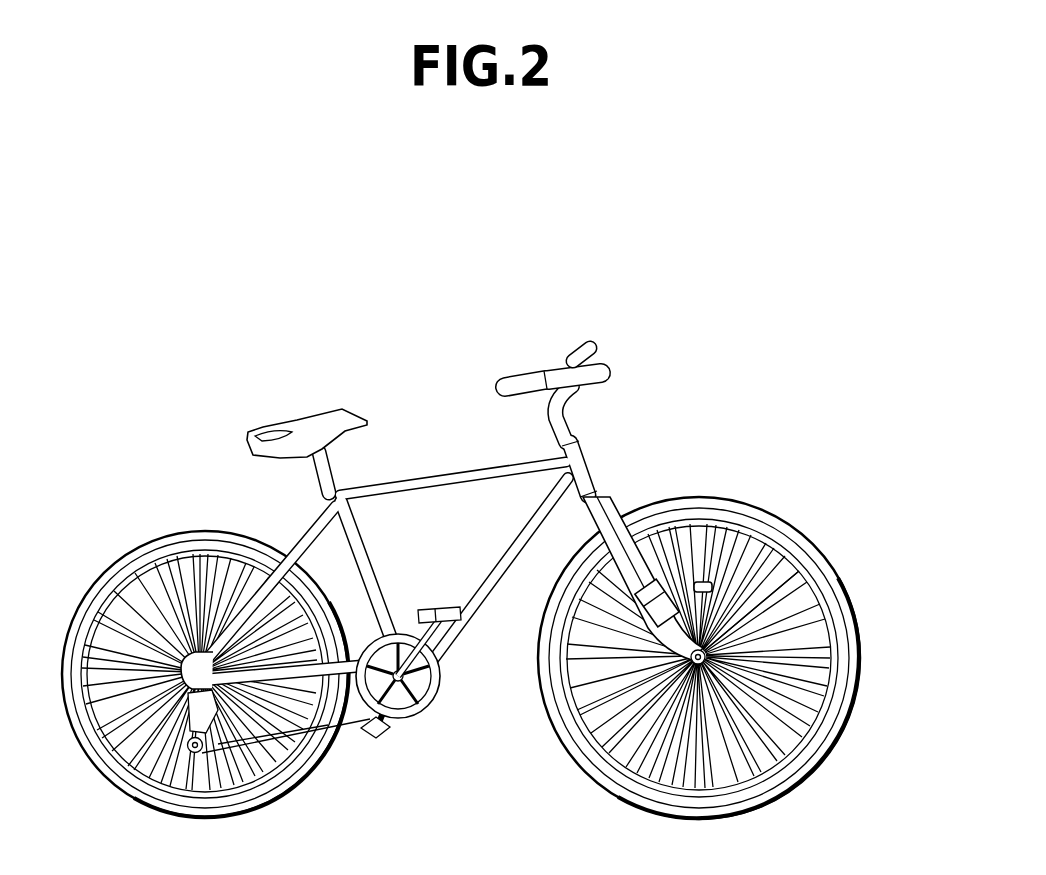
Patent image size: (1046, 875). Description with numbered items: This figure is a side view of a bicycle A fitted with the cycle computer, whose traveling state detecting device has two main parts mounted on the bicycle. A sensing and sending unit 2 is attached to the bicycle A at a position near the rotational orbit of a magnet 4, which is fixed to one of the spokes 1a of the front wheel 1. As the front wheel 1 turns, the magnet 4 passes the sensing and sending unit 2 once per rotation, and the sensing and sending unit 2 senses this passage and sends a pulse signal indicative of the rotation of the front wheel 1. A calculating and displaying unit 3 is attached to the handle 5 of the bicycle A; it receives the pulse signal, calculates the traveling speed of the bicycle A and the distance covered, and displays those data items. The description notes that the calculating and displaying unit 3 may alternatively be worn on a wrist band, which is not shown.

The front wheel 1 is at (853, 607).
The spokes 1a is at (712, 549).
The sensing and sending unit 2 is at (672, 612).
The calculating and displaying unit 3 is at (588, 345).
The magnet 4 is at (740, 573).
The handle 5 is at (603, 366).
The bicycle A is at (447, 355).